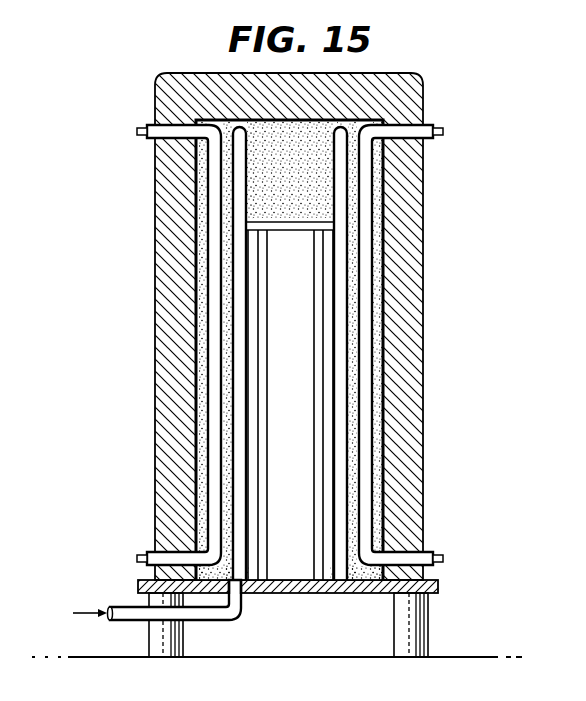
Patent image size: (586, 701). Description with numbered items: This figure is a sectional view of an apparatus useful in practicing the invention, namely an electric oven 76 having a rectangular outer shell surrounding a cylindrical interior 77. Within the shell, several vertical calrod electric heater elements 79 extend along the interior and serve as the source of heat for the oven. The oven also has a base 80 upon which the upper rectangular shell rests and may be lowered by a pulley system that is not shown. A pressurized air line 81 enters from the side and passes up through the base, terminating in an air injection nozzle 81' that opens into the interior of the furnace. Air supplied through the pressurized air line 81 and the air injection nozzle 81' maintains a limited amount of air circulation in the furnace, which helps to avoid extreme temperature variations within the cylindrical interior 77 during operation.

The oven 76 is at (407, 332).
The cylindrical interior 77 is at (303, 147).
The calrod electric heater elements 79 is at (242, 430).
The base 80 is at (443, 583).
The pressurized air line 81 is at (154, 611).
The air injection nozzle 81' is at (281, 607).